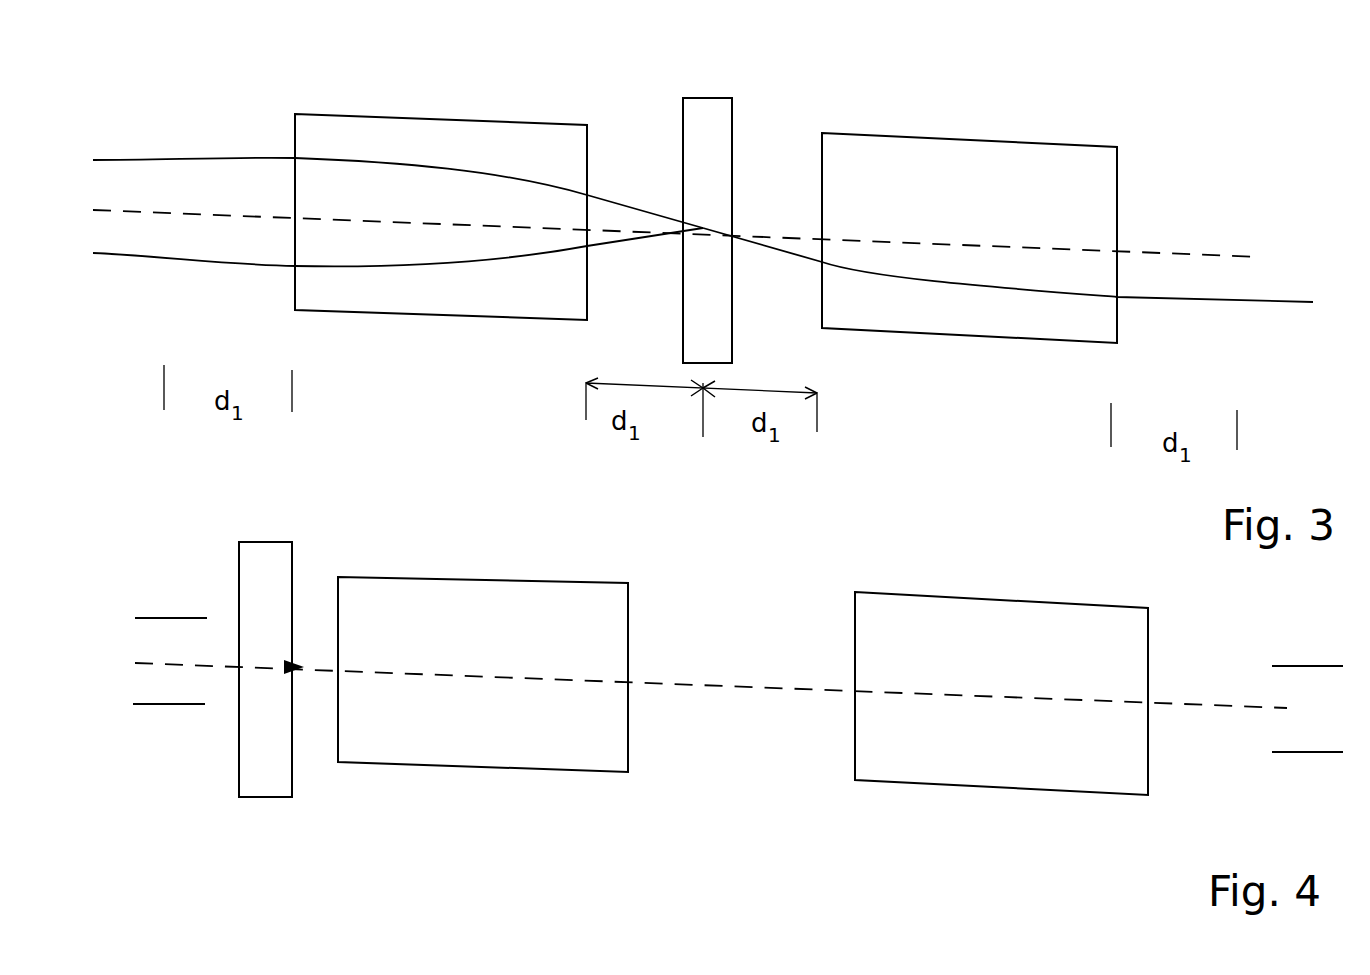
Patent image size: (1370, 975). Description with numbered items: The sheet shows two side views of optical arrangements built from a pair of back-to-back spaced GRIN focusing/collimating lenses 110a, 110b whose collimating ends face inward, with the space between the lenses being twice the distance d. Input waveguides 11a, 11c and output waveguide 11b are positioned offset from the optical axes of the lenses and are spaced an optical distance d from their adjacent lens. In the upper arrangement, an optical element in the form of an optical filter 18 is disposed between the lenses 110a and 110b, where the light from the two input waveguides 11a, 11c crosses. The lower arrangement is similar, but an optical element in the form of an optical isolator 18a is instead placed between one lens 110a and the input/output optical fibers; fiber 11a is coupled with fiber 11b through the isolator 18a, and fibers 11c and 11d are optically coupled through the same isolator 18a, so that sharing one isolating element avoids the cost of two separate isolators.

In FIG. 3, the input waveguide 11a is at (128, 160).
In FIG. 4, the input waveguide 11a is at (185, 617).
In FIG. 3, the output waveguide 11b is at (1270, 301).
In FIG. 4, the output waveguide 11b is at (1292, 752).
In FIG. 3, the input waveguide 11c is at (110, 253).
In FIG. 4, the input waveguide 11c is at (175, 705).
In FIG. 4, the output waveguide 11d is at (1292, 666).
In FIG. 3, the optical filter 18 is at (707, 114).
In FIG. 4, the optical isolator 18a is at (265, 557).
In FIG. 3, the focusing/collimating lens 110a is at (418, 135).
In FIG. 4, the focusing/collimating lens 110a is at (510, 597).
In FIG. 3, the focusing/collimating lens 110b is at (1017, 163).
In FIG. 4, the focusing/collimating lens 110b is at (1022, 612).